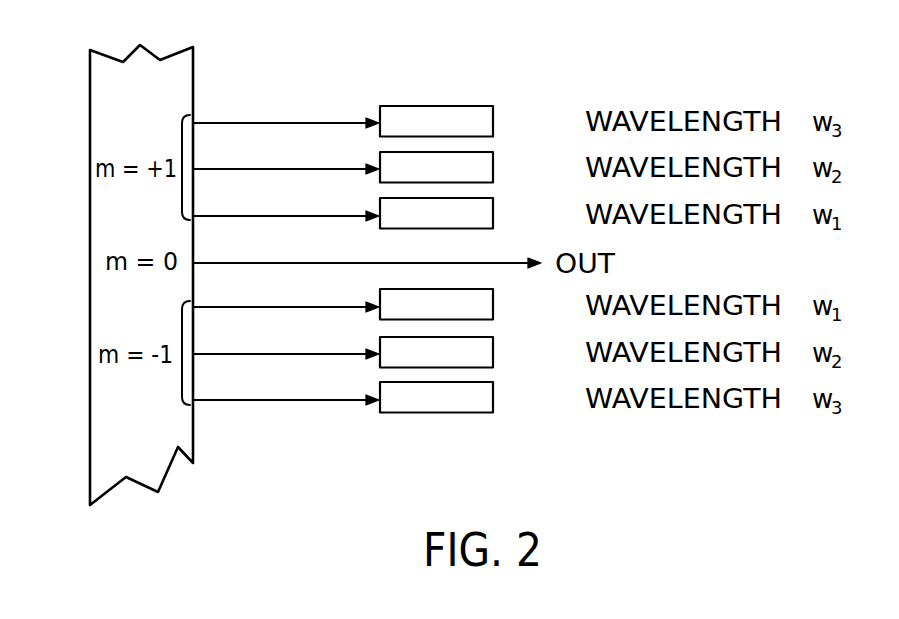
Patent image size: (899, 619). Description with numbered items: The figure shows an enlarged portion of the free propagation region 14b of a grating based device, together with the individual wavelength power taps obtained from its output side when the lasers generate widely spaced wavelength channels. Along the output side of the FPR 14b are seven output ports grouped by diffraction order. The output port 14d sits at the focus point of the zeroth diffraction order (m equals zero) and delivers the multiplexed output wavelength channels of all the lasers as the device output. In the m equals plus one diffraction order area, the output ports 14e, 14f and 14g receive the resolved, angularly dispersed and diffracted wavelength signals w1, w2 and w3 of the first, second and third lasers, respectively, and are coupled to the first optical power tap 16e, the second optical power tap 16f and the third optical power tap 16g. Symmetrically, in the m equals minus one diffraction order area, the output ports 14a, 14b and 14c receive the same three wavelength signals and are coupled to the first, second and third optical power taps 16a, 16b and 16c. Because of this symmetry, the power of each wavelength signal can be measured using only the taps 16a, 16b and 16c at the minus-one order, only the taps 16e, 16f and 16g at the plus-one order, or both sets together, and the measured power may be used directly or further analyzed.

The free propagation region 14b is at (90, 83).
The output port 14g is at (195, 119).
The output port 14f is at (195, 165).
The output port 14e is at (195, 212).
The output port 14d is at (195, 259).
The output port 14a is at (195, 303).
The output port 14c is at (195, 396).
The third optical power tap 16g is at (493, 117).
The second optical power tap 16f is at (493, 163).
The first optical power tap 16e is at (493, 210).
The first optical power tap 16a is at (493, 301).
The second optical power tap 16b is at (493, 348).
The third optical power tap 16c is at (493, 394).